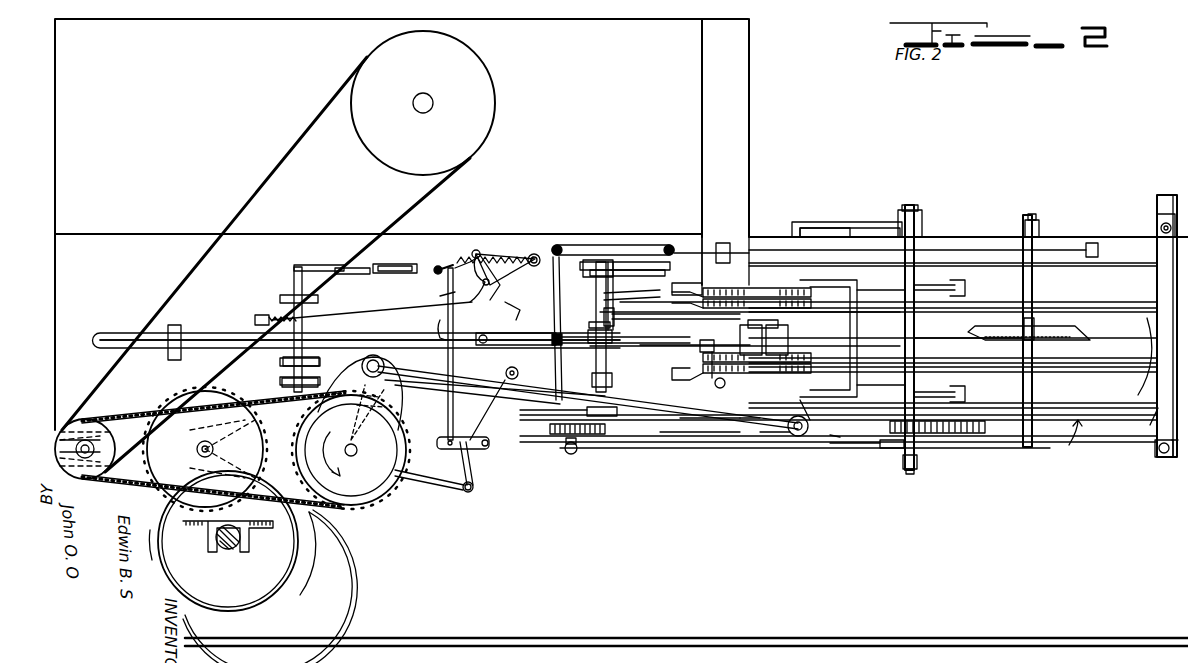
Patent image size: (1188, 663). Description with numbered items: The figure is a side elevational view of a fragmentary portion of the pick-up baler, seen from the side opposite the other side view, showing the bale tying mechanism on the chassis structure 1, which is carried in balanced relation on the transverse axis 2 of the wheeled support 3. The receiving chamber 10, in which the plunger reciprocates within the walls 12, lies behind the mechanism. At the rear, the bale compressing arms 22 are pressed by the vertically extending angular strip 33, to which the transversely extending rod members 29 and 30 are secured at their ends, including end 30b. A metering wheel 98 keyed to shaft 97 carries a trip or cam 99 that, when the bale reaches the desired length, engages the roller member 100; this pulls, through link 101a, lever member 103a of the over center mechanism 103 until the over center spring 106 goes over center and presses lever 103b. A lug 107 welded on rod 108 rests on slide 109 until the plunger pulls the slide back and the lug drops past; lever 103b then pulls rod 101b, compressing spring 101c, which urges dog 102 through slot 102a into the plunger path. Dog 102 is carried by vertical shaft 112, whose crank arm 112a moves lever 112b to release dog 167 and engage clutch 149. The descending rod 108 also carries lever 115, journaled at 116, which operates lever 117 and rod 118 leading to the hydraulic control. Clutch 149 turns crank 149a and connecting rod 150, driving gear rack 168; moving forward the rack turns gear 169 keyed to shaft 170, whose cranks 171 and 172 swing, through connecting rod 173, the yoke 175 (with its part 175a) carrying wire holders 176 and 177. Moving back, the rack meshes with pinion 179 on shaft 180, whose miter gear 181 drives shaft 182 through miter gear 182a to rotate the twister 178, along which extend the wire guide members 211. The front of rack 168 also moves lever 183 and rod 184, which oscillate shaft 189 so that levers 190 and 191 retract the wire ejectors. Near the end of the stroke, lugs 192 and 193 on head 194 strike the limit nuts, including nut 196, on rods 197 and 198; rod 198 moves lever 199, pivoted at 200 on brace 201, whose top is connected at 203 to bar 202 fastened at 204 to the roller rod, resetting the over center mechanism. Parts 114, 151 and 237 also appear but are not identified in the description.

The chassis structure 1 is at (1068, 460).
The transverse axis 2 is at (232, 551).
The wheeled support 3 is at (306, 603).
The receiving chamber 10 is at (1084, 236).
The walls 12 is at (745, 236).
The arms 22 is at (1130, 380).
The transversely extending rod member 29 is at (1164, 212).
The transversely extending rod member 30 is at (1170, 462).
The end of rod member 30 30b is at (1158, 460).
The vertically extending angular strip 33 is at (1148, 430).
The shaft 97 is at (1040, 290).
The metering wheel 98 is at (1072, 330).
The trip member or cam shaped device 99 is at (1012, 236).
The roller member 100 is at (1063, 236).
The link 101a is at (530, 245).
The rod 101b is at (345, 302).
The spring 101c is at (262, 312).
The dog 102 is at (395, 262).
The slot 102a is at (370, 265).
The over center mechanism 103 is at (480, 250).
The lever member 103a is at (500, 282).
The lever 103b is at (453, 291).
The over center spring 106 is at (460, 262).
The lug 107 is at (440, 318).
The rod 108 is at (455, 318).
The slide 109 is at (380, 332).
The shaft 112 is at (293, 275).
The crank arm 112a is at (288, 384).
The lever 112b is at (330, 358).
The rod 114 is at (808, 445).
The lever 115 is at (452, 448).
The journal 116 is at (465, 492).
The lever 117 is at (472, 490).
The operating rod 118 is at (418, 480).
The clutch 149 is at (368, 478).
The crank 149a is at (455, 392).
The connecting rod 150 is at (470, 380).
The pivot shaft 151 is at (373, 366).
The dog 167 is at (392, 385).
The gear rack 168 is at (572, 445).
The gear 169 is at (908, 475).
The shaft 170 is at (914, 340).
The crank 171 is at (965, 288).
The crank 172 is at (962, 395).
The connecting rod 173 is at (876, 236).
The yoke 175 is at (780, 236).
The bracket foot 175a is at (754, 235).
The wire holder 176 is at (818, 236).
The wire holder 177 is at (872, 310).
The twister 178 is at (692, 320).
The pinion 179 is at (575, 456).
The shaft 180 is at (600, 360).
The miter gear 181 is at (597, 282).
The shaft 182 is at (703, 300).
The miter gear 182a is at (670, 280).
The lever 183 is at (470, 446).
The rod 184 is at (545, 418).
The shaft 189 is at (660, 350).
The lever 190 is at (748, 330).
The lever 191 is at (843, 330).
The lug 192 is at (760, 428).
The lug 193 is at (797, 440).
The head 194 is at (778, 446).
The limit nut 196 is at (885, 448).
The rod 197 is at (695, 440).
The rod 198 is at (712, 452).
The lever 199 is at (548, 360).
The pivot point 200 is at (528, 345).
The brace 201 is at (500, 328).
The bar 202 is at (600, 262).
The pivotal connection 203 is at (566, 243).
The fastening point 204 is at (684, 250).
The wire guide members 211 is at (714, 236).
The post 237 is at (812, 236).